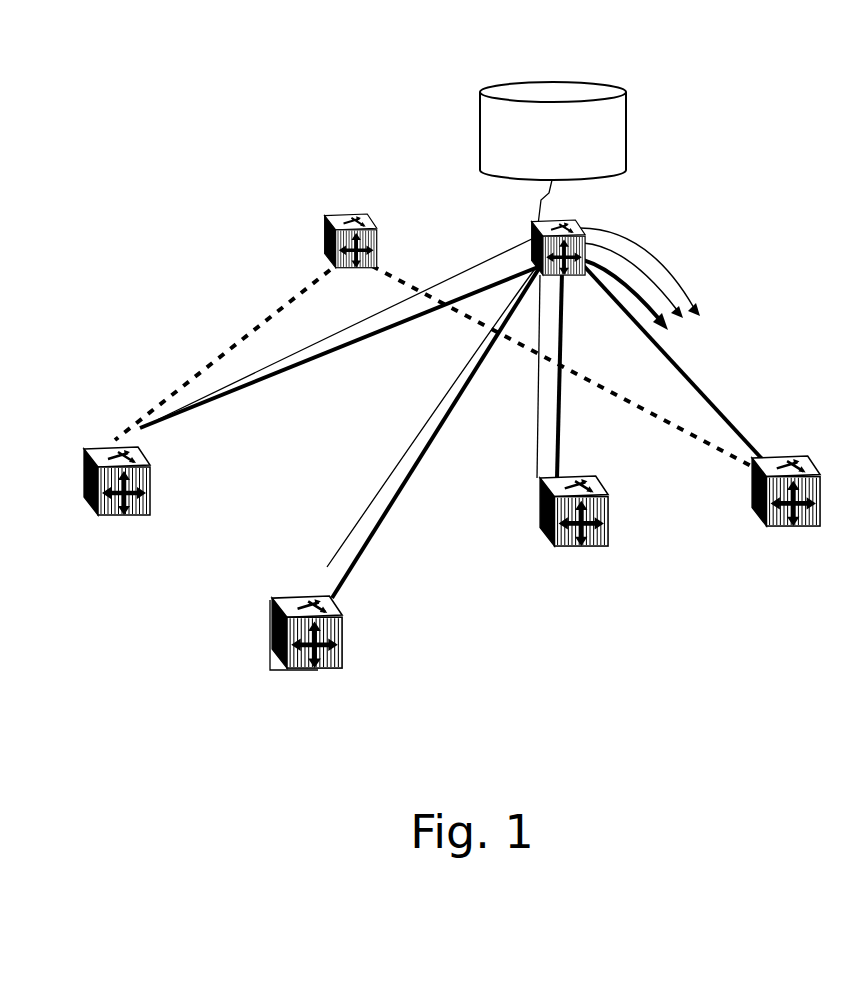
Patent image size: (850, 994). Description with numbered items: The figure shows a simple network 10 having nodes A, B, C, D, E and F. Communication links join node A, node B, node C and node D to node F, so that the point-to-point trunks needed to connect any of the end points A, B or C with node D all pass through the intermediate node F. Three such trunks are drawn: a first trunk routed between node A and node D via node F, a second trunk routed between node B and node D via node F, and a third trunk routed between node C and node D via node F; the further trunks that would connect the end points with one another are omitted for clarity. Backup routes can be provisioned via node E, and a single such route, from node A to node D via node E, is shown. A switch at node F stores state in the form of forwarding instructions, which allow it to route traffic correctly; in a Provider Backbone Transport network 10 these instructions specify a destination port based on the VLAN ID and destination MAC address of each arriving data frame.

The network 10 is at (457, 387).
The node A is at (117, 502).
The node B is at (307, 649).
The node C is at (574, 534).
The node D is at (791, 516).
The node E is at (435, 325).
The node F is at (451, 340).